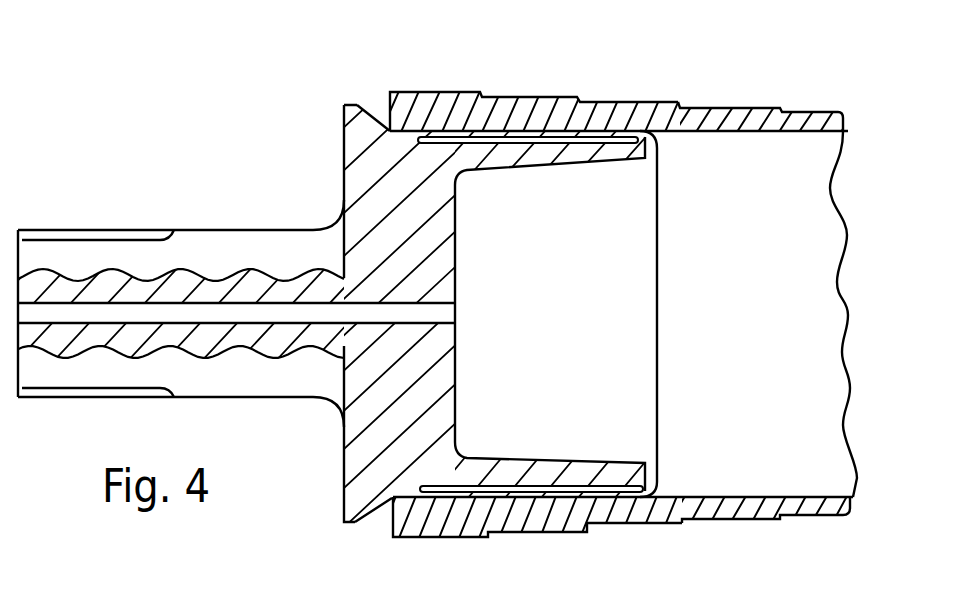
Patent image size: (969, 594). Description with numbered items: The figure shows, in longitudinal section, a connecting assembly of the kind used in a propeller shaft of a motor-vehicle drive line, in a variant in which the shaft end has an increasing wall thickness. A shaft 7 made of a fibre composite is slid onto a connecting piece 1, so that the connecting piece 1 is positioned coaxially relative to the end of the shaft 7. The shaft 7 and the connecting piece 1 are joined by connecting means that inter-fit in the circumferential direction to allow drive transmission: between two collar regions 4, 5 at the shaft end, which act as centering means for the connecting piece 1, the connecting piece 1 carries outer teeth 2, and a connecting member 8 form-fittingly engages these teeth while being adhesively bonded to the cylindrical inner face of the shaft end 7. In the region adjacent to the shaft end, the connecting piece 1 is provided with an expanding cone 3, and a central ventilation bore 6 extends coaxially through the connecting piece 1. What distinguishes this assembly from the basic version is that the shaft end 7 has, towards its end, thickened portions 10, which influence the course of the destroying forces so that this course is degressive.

The connecting piece 1 is at (360, 178).
The outer teeth 2 is at (625, 137).
The expanding cone 3 is at (378, 117).
The collar region 4 is at (417, 537).
The collar region 5 is at (653, 500).
The central ventilation bore 6 is at (102, 310).
The shaft 7 is at (757, 107).
The connecting member 8 is at (577, 98).
The thickened portions 10 is at (476, 92).